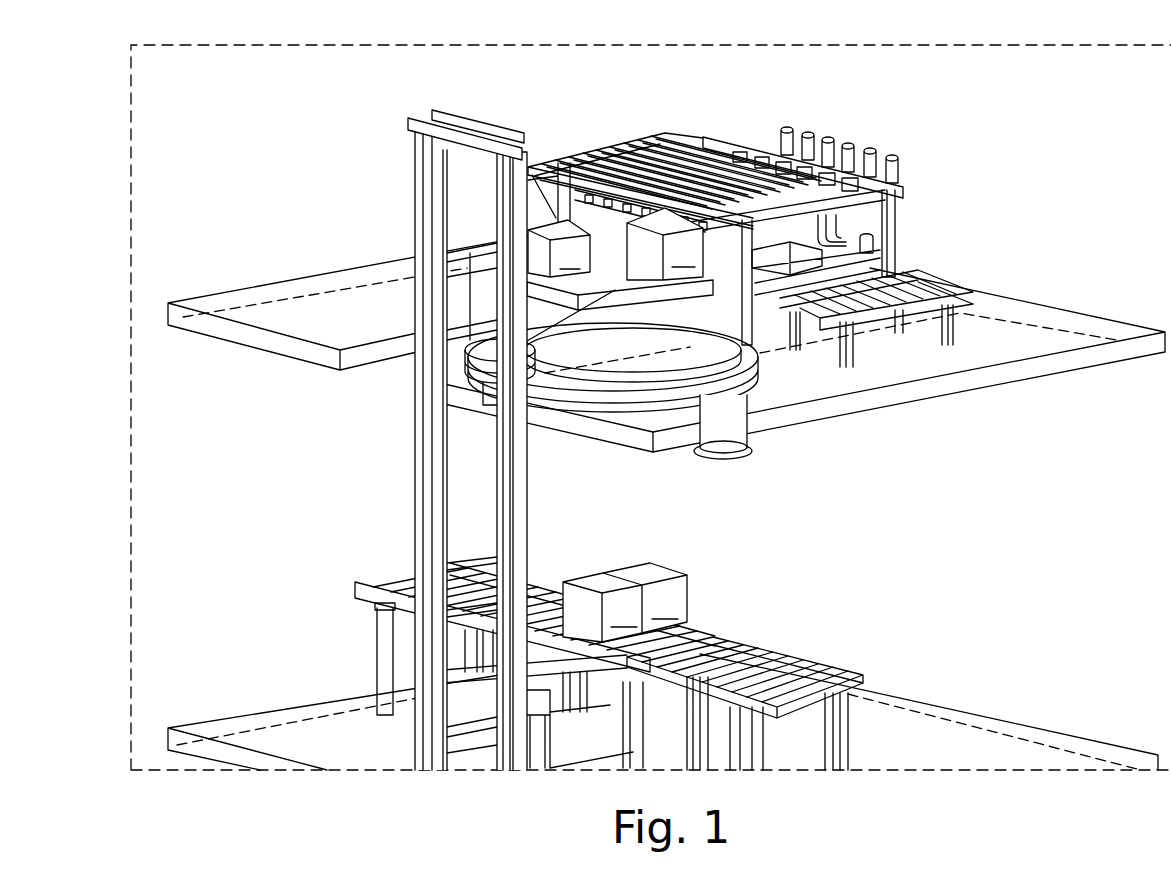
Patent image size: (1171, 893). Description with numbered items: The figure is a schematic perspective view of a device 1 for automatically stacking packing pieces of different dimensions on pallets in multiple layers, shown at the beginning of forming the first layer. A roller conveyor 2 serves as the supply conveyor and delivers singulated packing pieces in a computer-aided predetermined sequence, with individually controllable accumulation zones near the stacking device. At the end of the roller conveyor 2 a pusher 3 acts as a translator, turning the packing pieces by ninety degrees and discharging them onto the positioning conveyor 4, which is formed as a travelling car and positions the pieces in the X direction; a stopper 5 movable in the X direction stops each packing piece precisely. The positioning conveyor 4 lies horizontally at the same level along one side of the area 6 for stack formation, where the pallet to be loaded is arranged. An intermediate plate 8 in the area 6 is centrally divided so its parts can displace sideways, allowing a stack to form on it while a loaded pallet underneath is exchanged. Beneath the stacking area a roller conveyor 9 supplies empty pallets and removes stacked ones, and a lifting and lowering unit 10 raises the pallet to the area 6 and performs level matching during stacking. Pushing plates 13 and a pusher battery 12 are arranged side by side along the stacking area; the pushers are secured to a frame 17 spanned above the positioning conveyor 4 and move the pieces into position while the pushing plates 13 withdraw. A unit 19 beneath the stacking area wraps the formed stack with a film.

The device 1 is at (1083, 168).
The roller conveyor 2 is at (963, 273).
The pusher 3 is at (815, 310).
The positioning conveyor 4 is at (860, 170).
The stopper 5 is at (677, 563).
The area for stack formation 6 is at (535, 378).
The intermediate plate 8 is at (745, 333).
The roller conveyor 9 is at (790, 648).
The lifting and lowering unit 10 is at (415, 485).
The pusher battery 12 is at (820, 135).
The pushing plates 13 is at (677, 167).
The frame 17 is at (898, 227).
The unit for wrapping 19 is at (712, 425).